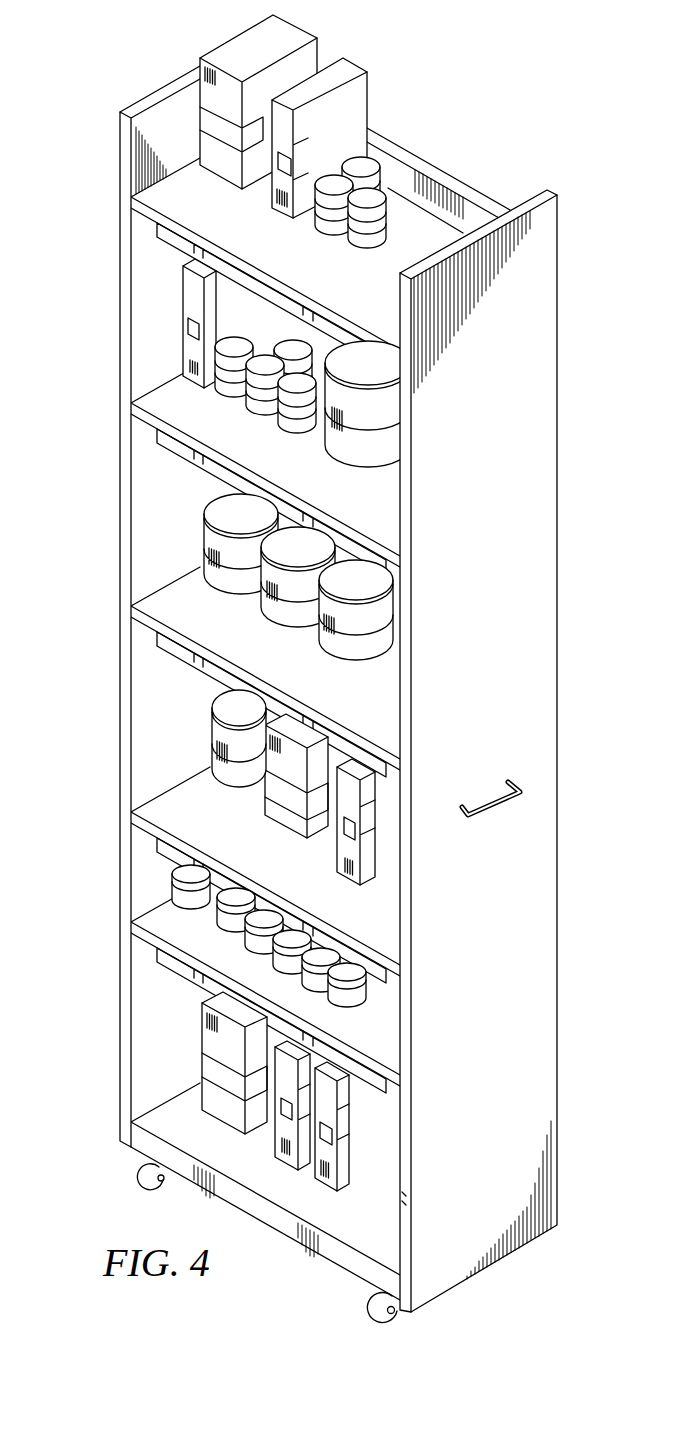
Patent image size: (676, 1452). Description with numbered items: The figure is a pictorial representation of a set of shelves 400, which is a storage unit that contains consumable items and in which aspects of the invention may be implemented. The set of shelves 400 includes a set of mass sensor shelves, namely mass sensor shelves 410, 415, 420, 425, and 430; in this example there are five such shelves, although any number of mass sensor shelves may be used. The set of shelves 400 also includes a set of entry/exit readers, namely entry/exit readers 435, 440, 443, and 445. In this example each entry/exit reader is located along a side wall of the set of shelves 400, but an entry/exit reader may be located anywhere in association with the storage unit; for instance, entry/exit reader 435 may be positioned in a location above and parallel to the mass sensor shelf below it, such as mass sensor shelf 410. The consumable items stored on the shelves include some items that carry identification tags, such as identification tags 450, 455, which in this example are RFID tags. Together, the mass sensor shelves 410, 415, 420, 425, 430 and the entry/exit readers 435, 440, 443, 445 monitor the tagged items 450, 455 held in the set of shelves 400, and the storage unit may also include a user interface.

The set of shelves 400 is at (497, 117).
The mass sensor shelf 410 is at (140, 403).
The mass sensor shelf 415 is at (140, 603).
The mass sensor shelf 420 is at (143, 807).
The mass sensor shelf 425 is at (143, 917).
The mass sensor shelf 430 is at (143, 1125).
The entry/exit reader 435 is at (170, 246).
The entry/exit reader 440 is at (183, 456).
The entry/exit reader 443 is at (173, 655).
The entry/exit reader 445 is at (183, 978).
The identification tag 450 is at (123, 468).
The identification tag 455 is at (213, 748).